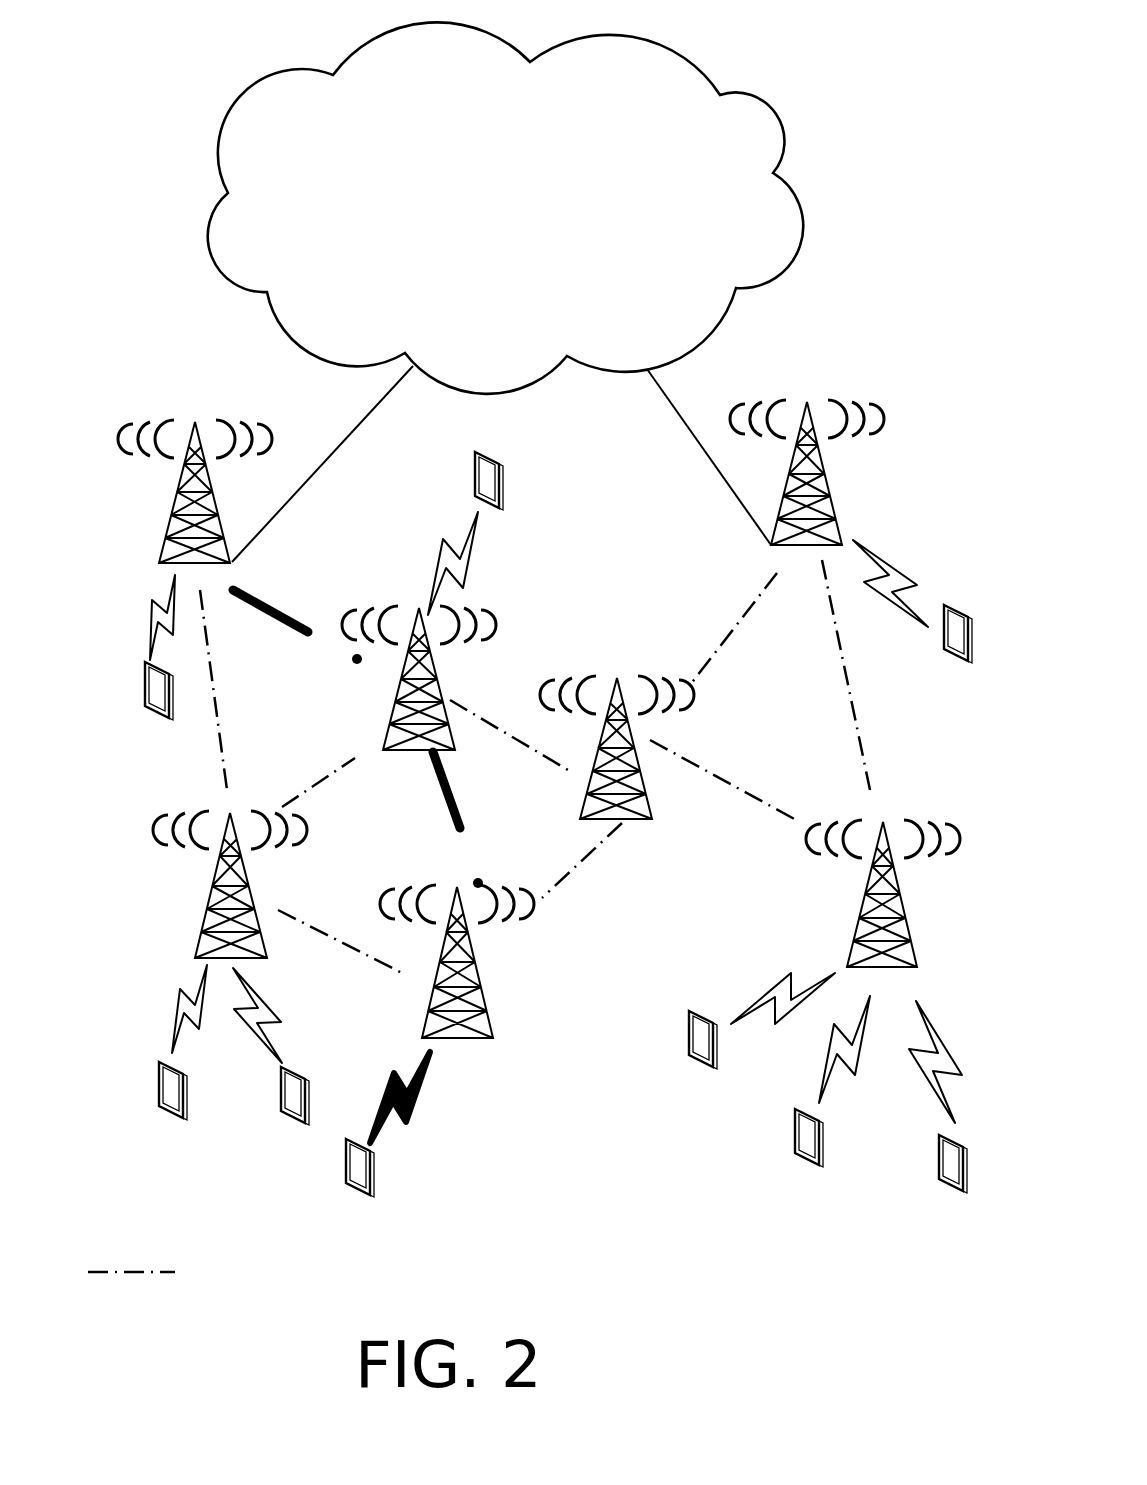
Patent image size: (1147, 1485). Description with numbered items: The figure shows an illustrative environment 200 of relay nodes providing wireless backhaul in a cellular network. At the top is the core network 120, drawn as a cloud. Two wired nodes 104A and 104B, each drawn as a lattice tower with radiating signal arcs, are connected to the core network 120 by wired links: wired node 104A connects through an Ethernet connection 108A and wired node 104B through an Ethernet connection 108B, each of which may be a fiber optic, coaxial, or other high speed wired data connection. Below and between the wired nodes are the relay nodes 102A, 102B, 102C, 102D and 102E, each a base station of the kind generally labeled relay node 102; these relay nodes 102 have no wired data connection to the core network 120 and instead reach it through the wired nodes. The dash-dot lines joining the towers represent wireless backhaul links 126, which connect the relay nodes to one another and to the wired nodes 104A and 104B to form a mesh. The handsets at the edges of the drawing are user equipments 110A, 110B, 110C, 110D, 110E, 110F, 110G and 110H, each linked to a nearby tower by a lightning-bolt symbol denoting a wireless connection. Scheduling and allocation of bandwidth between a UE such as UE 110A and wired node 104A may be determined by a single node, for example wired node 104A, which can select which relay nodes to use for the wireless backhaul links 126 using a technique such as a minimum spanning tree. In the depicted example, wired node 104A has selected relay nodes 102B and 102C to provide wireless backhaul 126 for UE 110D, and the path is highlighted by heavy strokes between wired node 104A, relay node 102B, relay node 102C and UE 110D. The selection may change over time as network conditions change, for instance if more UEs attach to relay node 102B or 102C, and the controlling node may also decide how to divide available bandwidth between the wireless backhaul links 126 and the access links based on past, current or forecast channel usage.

The environment 200 is at (199, 46).
The core network 120 is at (487, 229).
The wired node 104A is at (193, 418).
The wired node 104B is at (805, 400).
The Ethernet connection 108A is at (356, 430).
The Ethernet connection 108B is at (690, 437).
The relay node 102 is at (646, 796).
The relay node 102A is at (228, 812).
The relay node 102B is at (418, 606).
The relay node 102C is at (456, 886).
The relay node 102D is at (616, 676).
The relay node 102E is at (882, 820).
The UE 110A is at (490, 451).
The UE 110B is at (177, 1119).
The UE 110C is at (290, 1129).
The UE 110D is at (352, 1198).
The UE 110E is at (947, 662).
The UE 110F is at (693, 1072).
The UE 110G is at (802, 1171).
The UE 110H is at (952, 1195).
The wireless backhaul link 126 is at (435, 1283).